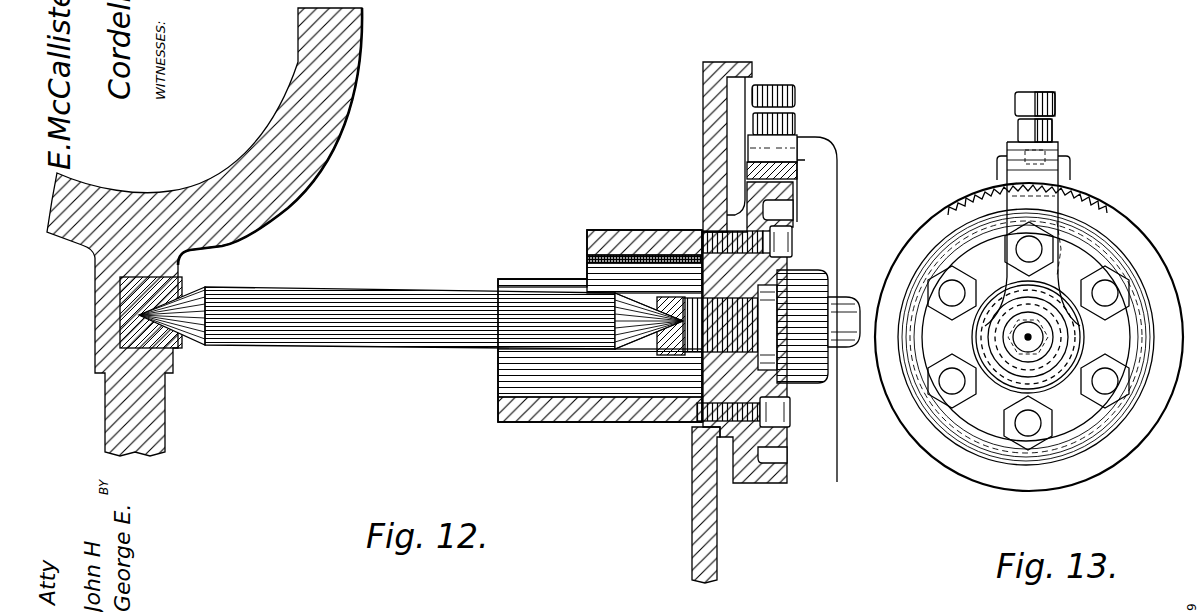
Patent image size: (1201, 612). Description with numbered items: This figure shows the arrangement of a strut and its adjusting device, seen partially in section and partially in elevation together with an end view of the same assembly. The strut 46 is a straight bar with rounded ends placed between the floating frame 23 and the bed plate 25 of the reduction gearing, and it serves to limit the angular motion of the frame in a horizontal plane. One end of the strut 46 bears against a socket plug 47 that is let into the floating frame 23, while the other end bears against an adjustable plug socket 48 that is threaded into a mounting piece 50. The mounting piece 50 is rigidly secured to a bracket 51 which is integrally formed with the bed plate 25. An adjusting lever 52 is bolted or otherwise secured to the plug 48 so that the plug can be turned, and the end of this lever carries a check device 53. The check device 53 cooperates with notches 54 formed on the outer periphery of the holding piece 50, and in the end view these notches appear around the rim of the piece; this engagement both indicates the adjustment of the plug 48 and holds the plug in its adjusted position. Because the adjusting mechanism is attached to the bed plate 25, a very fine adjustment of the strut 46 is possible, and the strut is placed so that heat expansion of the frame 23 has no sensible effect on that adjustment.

In FIG. 12, the floating frame 23 is at (340, 100).
In FIG. 12, the bed plate 25 is at (707, 558).
In FIG. 12, the strut 46 is at (410, 322).
In FIG. 12, the socket plug 47 is at (180, 345).
In FIG. 12, the adjustable plug socket 48 is at (670, 300).
In FIG. 12, the mounting piece 50 is at (757, 478).
In FIG. 13, the mounting piece 50 is at (938, 450).
In FIG. 12, the bracket 51 is at (670, 412).
In FIG. 12, the adjusting lever 52 is at (817, 212).
In FIG. 13, the adjusting lever 52 is at (966, 208).
In FIG. 12, the check device 53 is at (799, 170).
In FIG. 13, the check device 53 is at (997, 160).
In FIG. 13, the notches 54 is at (982, 192).